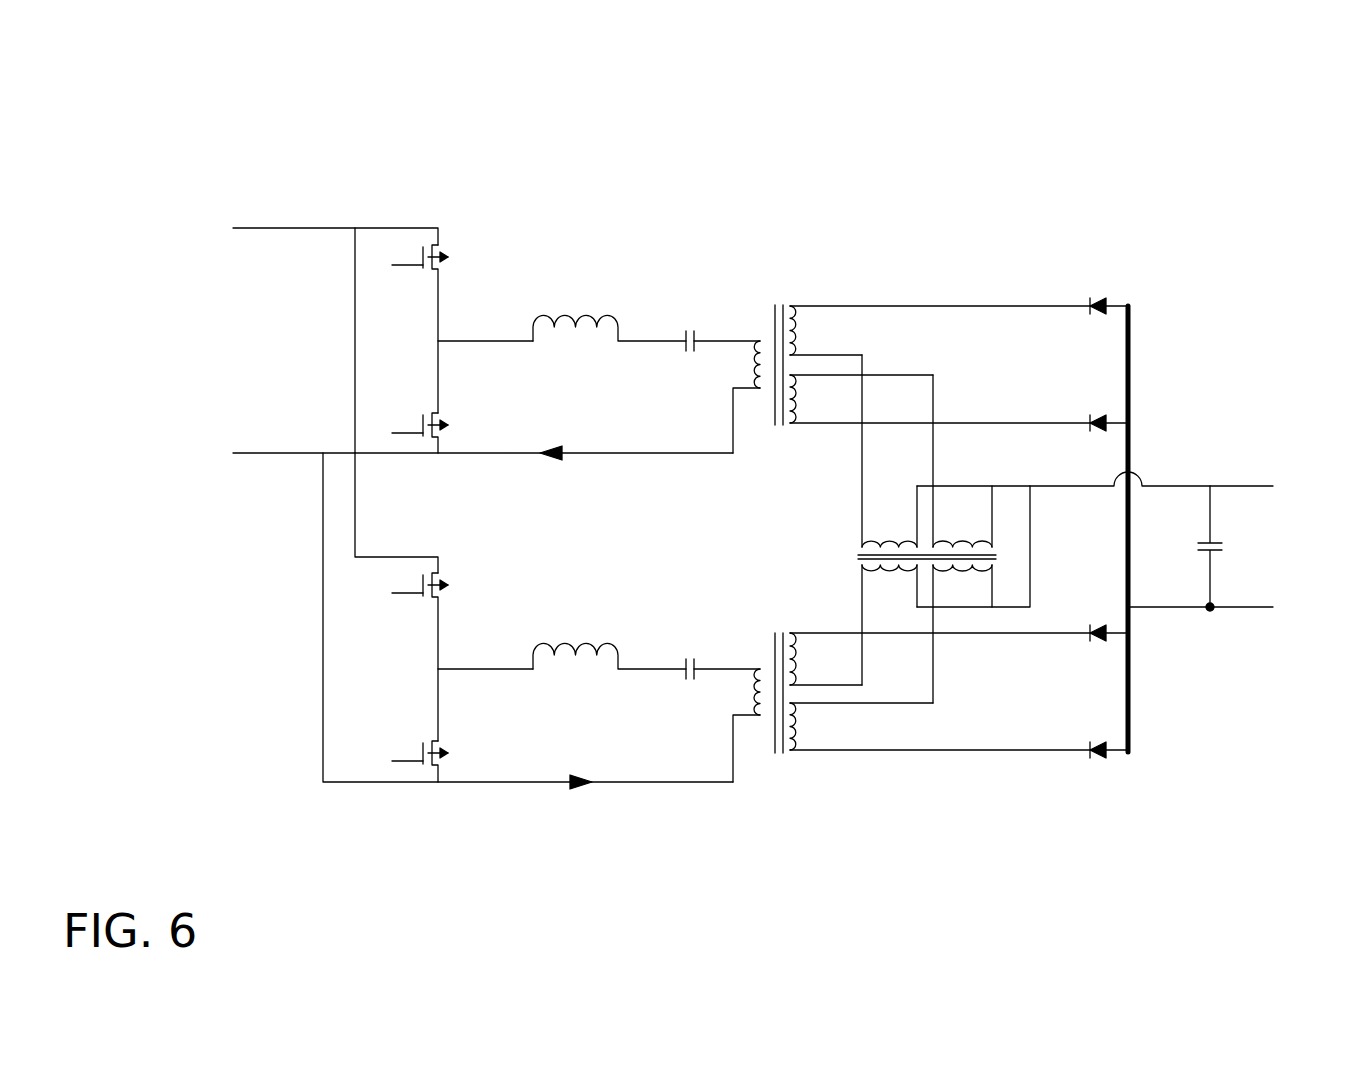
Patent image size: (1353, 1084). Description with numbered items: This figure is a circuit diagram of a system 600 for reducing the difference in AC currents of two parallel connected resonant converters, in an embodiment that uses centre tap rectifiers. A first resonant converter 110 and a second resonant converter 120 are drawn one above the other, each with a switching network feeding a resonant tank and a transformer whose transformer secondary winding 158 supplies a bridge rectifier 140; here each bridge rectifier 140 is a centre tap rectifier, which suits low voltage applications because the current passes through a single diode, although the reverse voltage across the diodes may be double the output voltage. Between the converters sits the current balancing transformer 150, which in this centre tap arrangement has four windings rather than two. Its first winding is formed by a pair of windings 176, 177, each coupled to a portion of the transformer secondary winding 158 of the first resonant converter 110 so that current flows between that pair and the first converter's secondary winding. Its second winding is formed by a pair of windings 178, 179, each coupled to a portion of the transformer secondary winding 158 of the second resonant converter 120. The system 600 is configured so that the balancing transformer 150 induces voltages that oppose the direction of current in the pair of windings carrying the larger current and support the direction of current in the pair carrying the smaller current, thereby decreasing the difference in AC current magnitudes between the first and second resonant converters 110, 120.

The system 600 is at (310, 140).
The first resonant converter 110 is at (218, 393).
The second resonant converter 120 is at (245, 723).
The current balancing transformer 150 is at (812, 553).
The transformer secondary winding 158 is at (798, 390).
The winding 176 is at (890, 545).
The winding 177 is at (970, 540).
The winding 178 is at (890, 572).
The winding 179 is at (960, 572).
The bridge rectifier 140 is at (1133, 363).